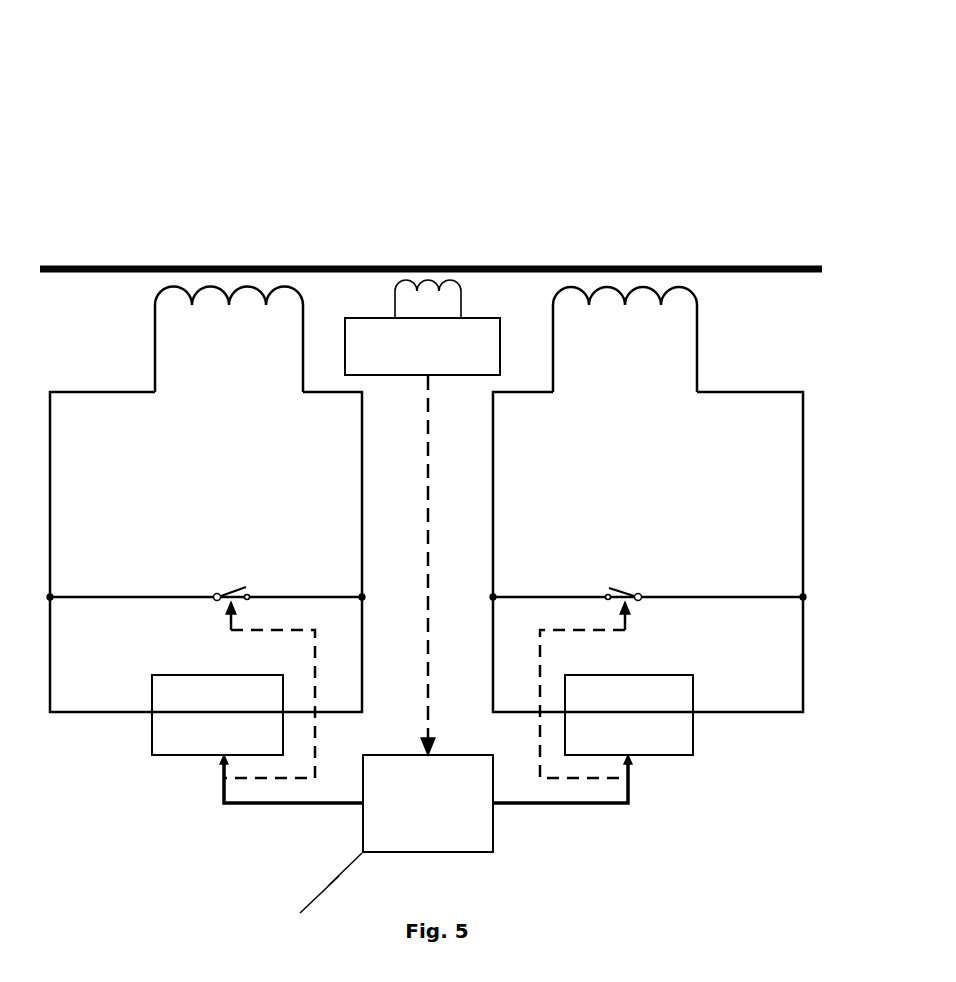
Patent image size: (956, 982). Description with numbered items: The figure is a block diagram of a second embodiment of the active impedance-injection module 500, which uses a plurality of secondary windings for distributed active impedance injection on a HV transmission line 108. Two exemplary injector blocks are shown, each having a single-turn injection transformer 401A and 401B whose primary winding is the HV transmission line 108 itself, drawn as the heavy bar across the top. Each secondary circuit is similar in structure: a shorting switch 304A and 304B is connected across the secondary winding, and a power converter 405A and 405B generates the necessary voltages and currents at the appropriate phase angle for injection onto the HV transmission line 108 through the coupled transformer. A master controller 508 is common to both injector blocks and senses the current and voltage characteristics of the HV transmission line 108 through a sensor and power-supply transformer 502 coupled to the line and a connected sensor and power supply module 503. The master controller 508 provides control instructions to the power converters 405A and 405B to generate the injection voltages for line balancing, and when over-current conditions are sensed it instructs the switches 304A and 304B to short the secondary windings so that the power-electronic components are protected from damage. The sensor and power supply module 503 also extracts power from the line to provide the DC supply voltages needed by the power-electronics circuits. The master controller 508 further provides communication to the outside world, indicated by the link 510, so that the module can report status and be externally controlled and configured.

The active impedance-injection module 500 is at (313, 108).
The HV transmission line 108 is at (480, 266).
The sensor and power-supply transformer 502 is at (447, 284).
The sensor and power supply module 503 is at (389, 317).
The single-turn injection transformer 401A is at (230, 300).
The single-turn injection transformer 401B is at (624, 300).
The shorting switch 304A is at (240, 588).
The shorting switch 304B is at (615, 588).
The power converter 405A is at (152, 750).
The power converter 405B is at (695, 750).
The master controller 508 is at (497, 820).
The power input 510 is at (331, 885).